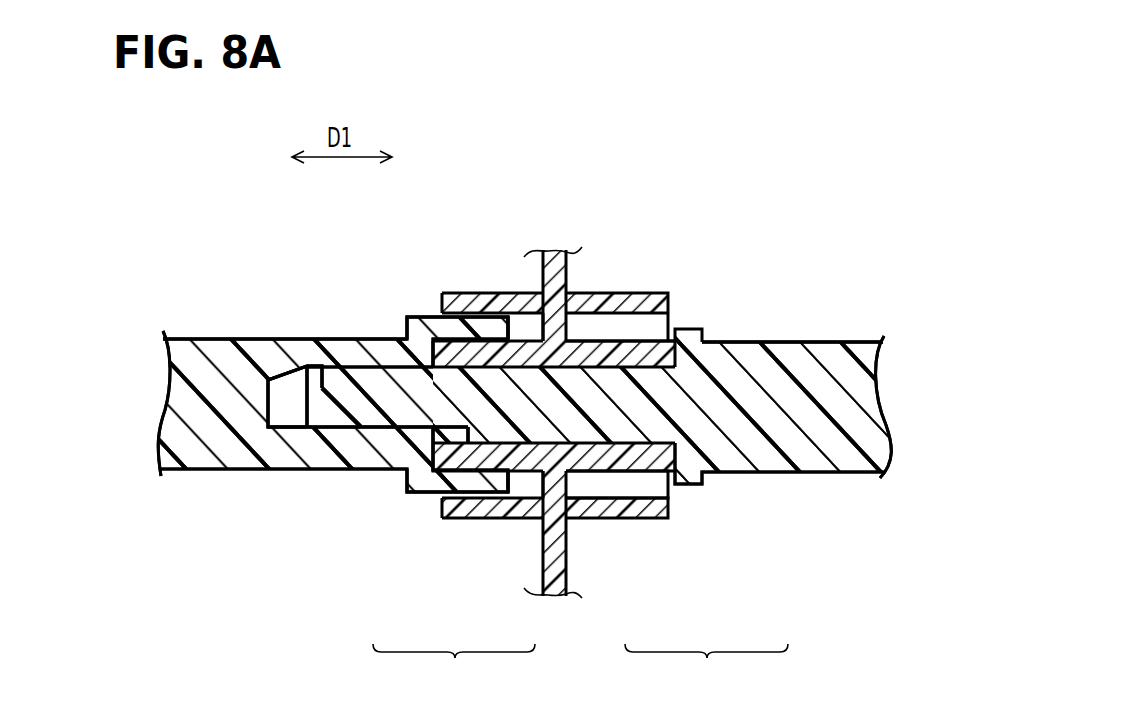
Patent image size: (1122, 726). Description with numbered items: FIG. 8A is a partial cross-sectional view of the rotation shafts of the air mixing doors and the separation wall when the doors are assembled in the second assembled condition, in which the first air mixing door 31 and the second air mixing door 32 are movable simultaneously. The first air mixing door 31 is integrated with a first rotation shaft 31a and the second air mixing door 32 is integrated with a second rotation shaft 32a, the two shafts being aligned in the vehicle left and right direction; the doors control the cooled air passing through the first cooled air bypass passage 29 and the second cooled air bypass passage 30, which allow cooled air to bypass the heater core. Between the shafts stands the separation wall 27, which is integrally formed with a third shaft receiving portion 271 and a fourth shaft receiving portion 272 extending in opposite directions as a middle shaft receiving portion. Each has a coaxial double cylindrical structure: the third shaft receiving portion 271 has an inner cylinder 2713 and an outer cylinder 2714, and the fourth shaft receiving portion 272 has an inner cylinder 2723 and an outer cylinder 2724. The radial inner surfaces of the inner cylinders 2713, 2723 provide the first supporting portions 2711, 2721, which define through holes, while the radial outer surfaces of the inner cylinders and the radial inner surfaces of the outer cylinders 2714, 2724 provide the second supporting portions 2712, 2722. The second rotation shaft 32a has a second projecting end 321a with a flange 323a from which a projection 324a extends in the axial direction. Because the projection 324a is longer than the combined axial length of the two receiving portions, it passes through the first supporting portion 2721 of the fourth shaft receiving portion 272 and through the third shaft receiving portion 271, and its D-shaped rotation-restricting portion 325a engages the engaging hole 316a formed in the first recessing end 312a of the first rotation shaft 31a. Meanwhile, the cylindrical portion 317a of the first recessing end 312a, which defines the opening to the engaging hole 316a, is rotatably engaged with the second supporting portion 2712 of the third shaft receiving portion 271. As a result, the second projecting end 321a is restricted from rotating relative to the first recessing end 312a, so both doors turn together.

The separation wall 27 is at (567, 520).
The third shaft receiving portion 271 is at (524, 567).
The fourth shaft receiving portion 272 is at (706, 668).
The first supporting portion 2711 is at (467, 518).
The second supporting portion 2712 is at (527, 484).
The inner cylinder 2713 is at (468, 292).
The outer cylinder 2714 is at (525, 292).
The first supporting portion 2721 is at (647, 518).
The second supporting portion 2722 is at (583, 484).
The inner cylinder 2723 is at (647, 362).
The outer cylinder 2724 is at (597, 292).
The first cooled air bypass passage 29 is at (237, 495).
The second cooled air bypass passage 30 is at (822, 498).
The first air mixing door 31 is at (202, 470).
The first rotation shaft 31a is at (250, 339).
The first recessing end 312a is at (389, 339).
The engaging hole 316a is at (307, 428).
The cylindrical portion 317a is at (497, 292).
The rotation-restricting portion 325a is at (372, 430).
The second air mixing door 32 is at (857, 473).
The second rotation shaft 32a is at (848, 342).
The second projecting end 321a is at (718, 342).
The flange 323a is at (703, 329).
The projection 324a is at (624, 362).